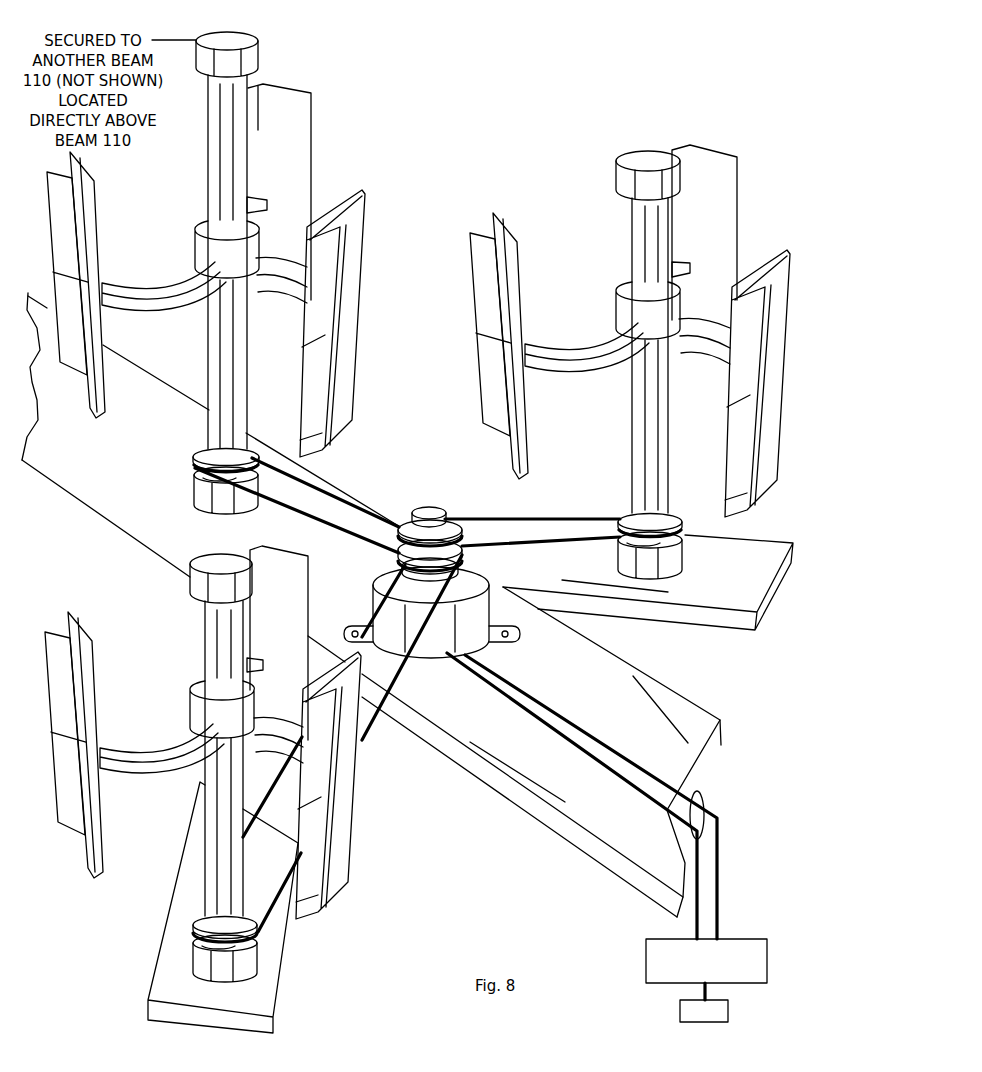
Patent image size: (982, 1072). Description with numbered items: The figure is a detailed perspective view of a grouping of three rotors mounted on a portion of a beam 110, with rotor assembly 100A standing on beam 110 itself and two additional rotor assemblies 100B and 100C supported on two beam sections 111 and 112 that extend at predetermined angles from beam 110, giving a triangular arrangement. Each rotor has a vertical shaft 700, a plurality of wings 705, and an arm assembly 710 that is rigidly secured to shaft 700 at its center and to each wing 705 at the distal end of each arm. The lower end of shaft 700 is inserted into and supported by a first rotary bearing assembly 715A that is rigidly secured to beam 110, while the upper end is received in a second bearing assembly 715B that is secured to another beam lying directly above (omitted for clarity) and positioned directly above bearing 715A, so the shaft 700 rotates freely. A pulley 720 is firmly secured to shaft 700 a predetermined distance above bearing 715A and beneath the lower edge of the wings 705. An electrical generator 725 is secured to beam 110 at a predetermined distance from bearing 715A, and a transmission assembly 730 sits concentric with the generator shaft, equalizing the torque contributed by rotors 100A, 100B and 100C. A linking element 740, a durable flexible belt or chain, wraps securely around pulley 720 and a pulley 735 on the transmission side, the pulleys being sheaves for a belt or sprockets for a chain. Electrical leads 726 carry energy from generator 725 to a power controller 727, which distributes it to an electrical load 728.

The rotor assembly 100A is at (363, 155).
The rotor assembly 100B is at (580, 188).
The rotor assembly 100C is at (378, 851).
The beam 110 is at (534, 815).
The beam section 111 is at (714, 628).
The beam section 112 is at (290, 996).
The shaft 700 is at (207, 347).
The wings 705 is at (100, 207).
The arm assembly 710 is at (193, 263).
The first rotary bearing assembly 715A is at (193, 488).
The second bearing assembly 715B is at (259, 58).
The pulley 720 is at (198, 452).
The electrical generator 725 is at (432, 660).
The electrical leads 726 is at (706, 803).
The power controller 727 is at (646, 960).
The electrical load 728 is at (680, 1011).
The transmission assembly 730 is at (430, 505).
The pulley 735 is at (464, 552).
The linking element 740 is at (311, 518).